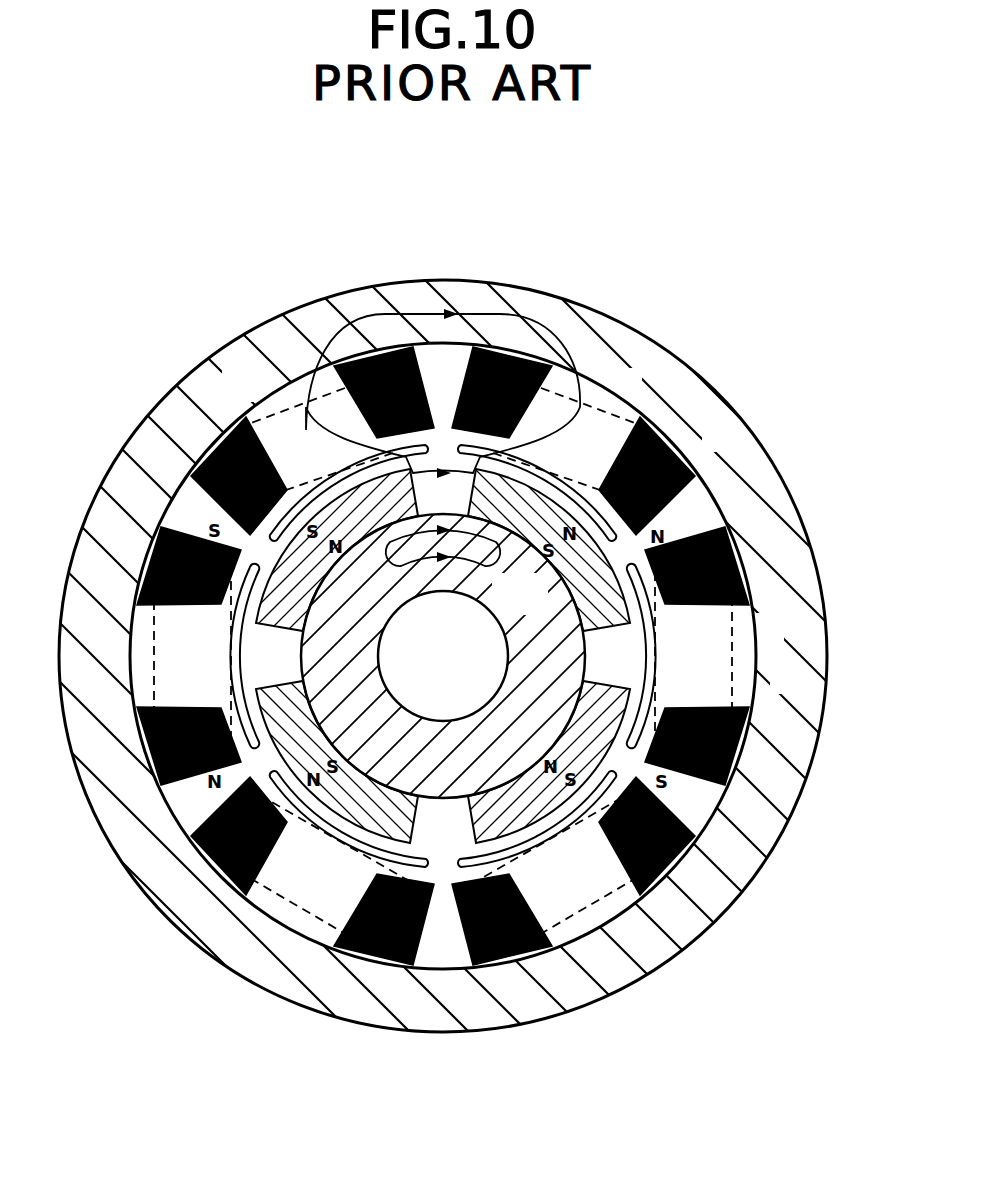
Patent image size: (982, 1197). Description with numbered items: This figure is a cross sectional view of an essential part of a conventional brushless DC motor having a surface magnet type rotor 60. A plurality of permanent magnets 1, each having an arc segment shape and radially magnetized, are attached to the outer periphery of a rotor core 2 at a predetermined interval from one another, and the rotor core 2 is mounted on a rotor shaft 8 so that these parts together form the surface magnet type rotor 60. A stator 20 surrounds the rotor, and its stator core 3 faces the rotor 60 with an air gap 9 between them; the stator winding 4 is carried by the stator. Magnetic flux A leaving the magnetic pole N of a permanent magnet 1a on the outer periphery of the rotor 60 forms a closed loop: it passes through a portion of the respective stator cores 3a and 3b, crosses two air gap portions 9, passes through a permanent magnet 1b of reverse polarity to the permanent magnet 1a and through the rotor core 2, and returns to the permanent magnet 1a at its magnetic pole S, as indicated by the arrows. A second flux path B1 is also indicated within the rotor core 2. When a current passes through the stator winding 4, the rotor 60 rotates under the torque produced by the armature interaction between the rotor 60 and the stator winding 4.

The stator 20 is at (160, 813).
The stator core 3 is at (598, 880).
The stator core 3a is at (587, 433).
The stator core 3b is at (306, 428).
The air gap 9 is at (640, 437).
The stator winding 4 is at (662, 450).
The surface magnet type rotor 60 is at (288, 655).
The permanent magnet 1a is at (622, 610).
The permanent magnet 1b is at (330, 505).
The permanent magnet 1 is at (520, 792).
The rotor core 2 is at (578, 656).
The rotor shaft 8 is at (420, 696).
The magnetic flux A is at (563, 322).
The magnetic flux path B1 is at (488, 557).